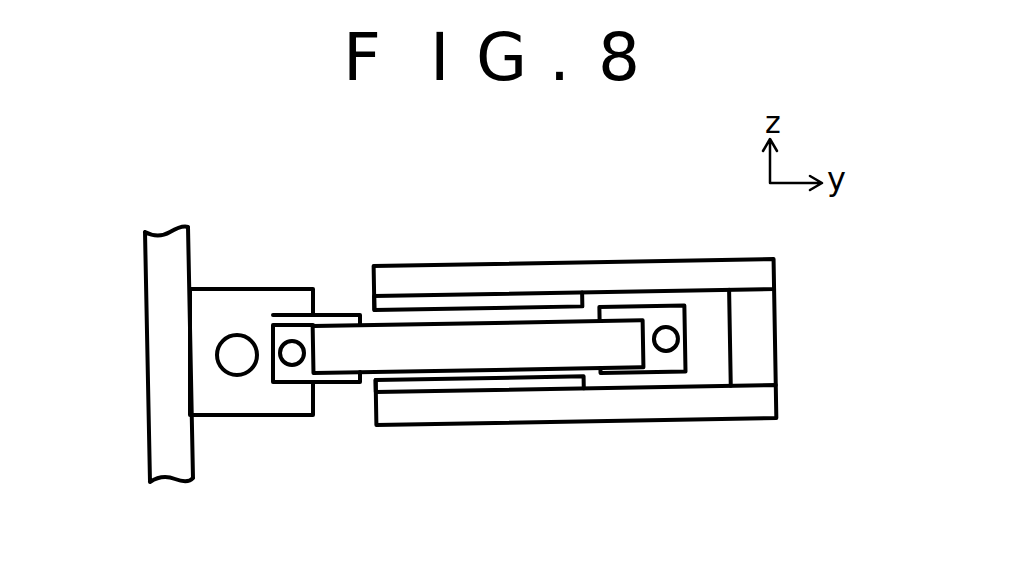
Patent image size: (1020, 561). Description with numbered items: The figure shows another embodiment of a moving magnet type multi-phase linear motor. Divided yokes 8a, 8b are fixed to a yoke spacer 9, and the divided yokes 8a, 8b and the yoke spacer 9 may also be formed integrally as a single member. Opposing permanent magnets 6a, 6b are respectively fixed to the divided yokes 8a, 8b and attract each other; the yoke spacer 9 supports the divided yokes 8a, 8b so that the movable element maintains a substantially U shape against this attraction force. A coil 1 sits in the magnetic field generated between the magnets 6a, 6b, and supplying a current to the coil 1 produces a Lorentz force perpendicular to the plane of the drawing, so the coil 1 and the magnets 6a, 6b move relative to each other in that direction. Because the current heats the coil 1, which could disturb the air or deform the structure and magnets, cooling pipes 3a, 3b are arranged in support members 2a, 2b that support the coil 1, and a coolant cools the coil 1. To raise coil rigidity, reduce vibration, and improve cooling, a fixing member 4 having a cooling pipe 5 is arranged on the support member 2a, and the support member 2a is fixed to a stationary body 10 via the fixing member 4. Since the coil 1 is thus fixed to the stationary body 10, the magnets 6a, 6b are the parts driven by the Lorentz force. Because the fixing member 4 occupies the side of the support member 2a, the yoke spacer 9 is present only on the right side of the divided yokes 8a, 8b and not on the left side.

The coil 1 is at (413, 345).
The support member 2a is at (293, 330).
The support member 2b is at (662, 322).
The cooling pipe 3a is at (293, 353).
The cooling pipe 3b is at (665, 343).
The fixing member 4 is at (229, 306).
The cooling pipe 5 is at (238, 357).
The permanent magnet 6a is at (505, 385).
The permanent magnet 6b is at (476, 303).
The divided yoke 8a is at (598, 407).
The divided yoke 8b is at (565, 278).
The yoke spacer 9 is at (752, 358).
The stationary body 10 is at (157, 350).